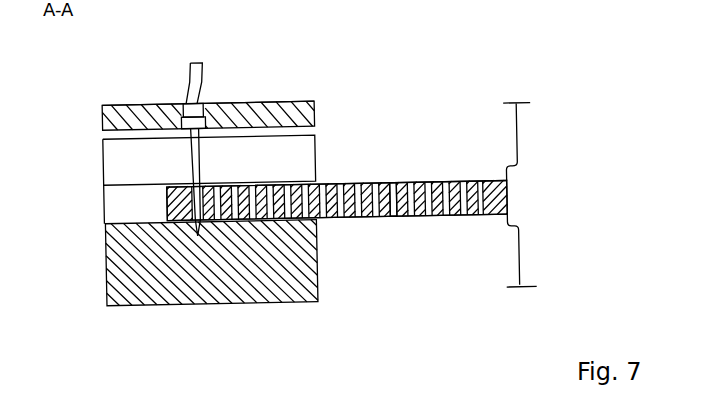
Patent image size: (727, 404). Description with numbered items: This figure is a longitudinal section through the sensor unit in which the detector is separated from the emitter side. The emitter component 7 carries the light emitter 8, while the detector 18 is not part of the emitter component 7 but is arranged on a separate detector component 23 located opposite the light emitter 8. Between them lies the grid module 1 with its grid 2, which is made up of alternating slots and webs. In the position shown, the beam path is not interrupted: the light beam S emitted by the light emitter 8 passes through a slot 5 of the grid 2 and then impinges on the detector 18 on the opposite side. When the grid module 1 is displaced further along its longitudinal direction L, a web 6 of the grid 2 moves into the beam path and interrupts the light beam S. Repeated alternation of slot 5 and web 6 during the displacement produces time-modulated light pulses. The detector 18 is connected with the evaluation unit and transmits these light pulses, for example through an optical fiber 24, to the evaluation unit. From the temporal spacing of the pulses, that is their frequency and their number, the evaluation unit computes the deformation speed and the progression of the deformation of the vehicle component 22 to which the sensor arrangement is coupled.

The grid module 1 is at (450, 184).
The grid 2 is at (394, 184).
The slot 5 is at (345, 218).
The web 6 is at (393, 218).
The emitter component 7 is at (324, 142).
The light emitter 8 is at (197, 234).
The detector 18 is at (200, 118).
The vehicle component 22 is at (519, 135).
The detector component 23 is at (229, 100).
The optical fiber 24 is at (196, 82).
The longitudinal direction L is at (167, 204).
The light beam S is at (211, 153).